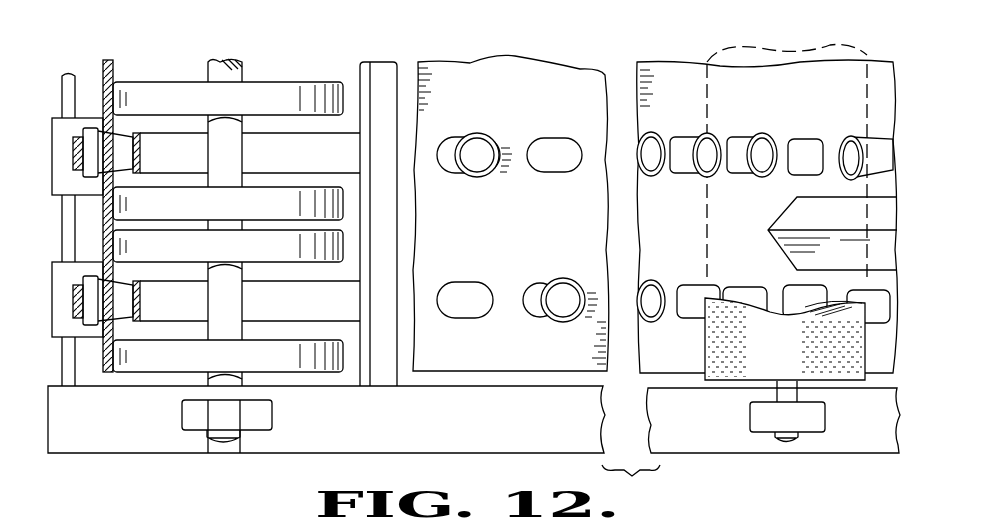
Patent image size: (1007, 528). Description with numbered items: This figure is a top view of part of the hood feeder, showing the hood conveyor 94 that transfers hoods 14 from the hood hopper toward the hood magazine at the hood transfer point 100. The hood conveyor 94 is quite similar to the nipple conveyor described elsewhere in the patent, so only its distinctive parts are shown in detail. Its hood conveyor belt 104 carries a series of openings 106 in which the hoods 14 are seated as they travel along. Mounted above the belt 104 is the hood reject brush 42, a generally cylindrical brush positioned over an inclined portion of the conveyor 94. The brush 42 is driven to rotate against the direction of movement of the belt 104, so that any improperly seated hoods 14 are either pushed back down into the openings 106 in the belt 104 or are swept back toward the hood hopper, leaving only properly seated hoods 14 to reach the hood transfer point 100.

The hood transfer point 100 is at (90, 408).
The hood conveyor belt 104 is at (488, 365).
The openings 106 is at (546, 170).
The hood 14 is at (571, 273).
The hood conveyor 94 is at (882, 375).
The hood reject brush 42 is at (728, 372).